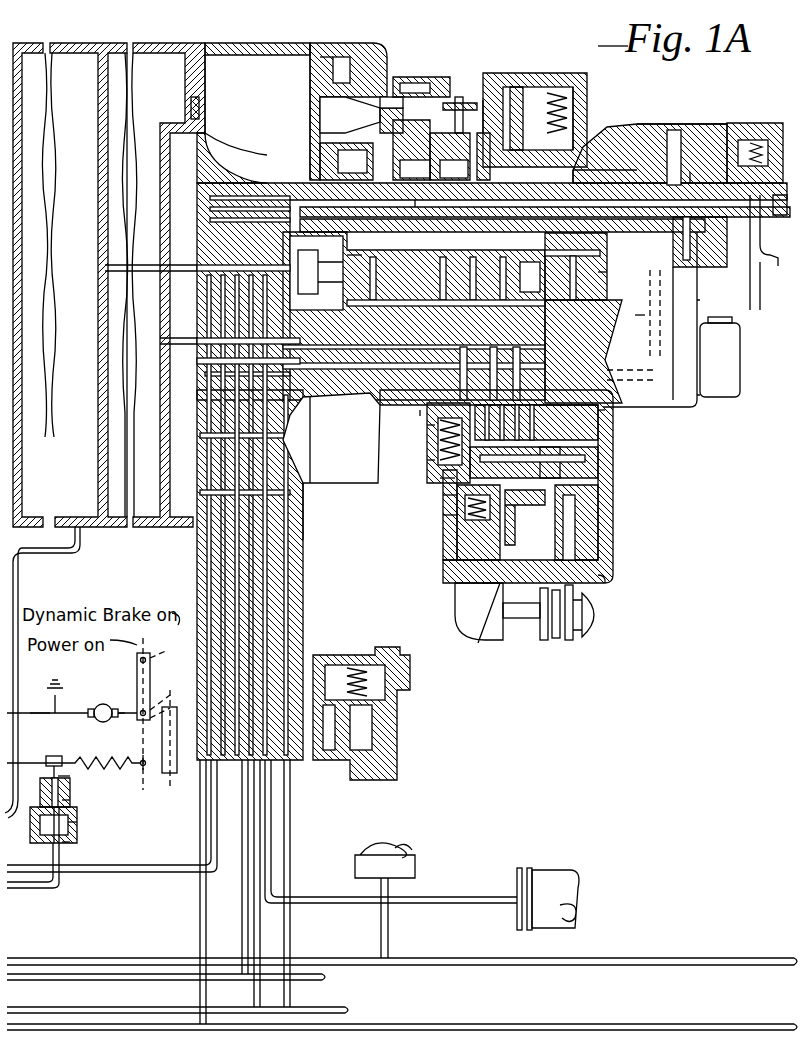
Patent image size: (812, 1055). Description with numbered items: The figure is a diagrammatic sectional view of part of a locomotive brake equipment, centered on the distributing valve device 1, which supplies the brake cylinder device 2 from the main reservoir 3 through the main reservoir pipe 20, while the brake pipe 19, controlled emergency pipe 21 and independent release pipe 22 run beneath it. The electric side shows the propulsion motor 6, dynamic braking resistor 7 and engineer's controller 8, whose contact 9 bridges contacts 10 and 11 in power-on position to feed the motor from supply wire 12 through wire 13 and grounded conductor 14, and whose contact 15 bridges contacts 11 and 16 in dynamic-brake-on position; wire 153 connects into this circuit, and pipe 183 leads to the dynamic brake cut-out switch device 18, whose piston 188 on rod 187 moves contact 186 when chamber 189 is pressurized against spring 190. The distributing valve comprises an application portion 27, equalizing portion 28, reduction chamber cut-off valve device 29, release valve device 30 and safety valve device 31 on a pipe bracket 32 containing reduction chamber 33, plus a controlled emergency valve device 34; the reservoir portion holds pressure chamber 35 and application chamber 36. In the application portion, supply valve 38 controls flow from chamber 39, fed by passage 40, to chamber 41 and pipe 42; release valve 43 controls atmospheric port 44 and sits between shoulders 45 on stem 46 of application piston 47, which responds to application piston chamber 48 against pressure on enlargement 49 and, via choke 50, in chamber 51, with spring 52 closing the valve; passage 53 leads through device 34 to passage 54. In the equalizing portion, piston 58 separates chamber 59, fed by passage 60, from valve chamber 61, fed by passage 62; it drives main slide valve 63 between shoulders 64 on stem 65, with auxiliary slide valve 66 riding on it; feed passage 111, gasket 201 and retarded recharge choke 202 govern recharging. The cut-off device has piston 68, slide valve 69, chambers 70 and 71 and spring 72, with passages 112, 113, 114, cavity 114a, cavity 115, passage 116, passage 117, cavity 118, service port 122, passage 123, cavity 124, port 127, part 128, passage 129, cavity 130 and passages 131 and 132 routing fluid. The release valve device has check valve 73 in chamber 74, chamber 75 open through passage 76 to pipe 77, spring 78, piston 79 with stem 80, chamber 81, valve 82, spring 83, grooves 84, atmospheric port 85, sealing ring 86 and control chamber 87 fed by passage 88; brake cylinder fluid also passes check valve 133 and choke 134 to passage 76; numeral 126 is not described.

The distributing valve device 1 is at (750, 382).
The brake cylinder device 2 is at (568, 870).
The main reservoir 3 is at (415, 860).
The propulsion motor 6 is at (115, 700).
The dynamic braking resistor 7 is at (90, 760).
The engineer's controller 8 is at (162, 637).
The contact 9 is at (169, 687).
The contact 10 is at (167, 652).
The contact 11 is at (170, 701).
The current supply wire 12 is at (137, 660).
The wire 13 is at (120, 718).
The grounded conductor 14 is at (68, 695).
The contact 15 is at (170, 765).
The contact 16 is at (141, 762).
The dynamic brake cut-out switch device 18 is at (88, 822).
The brake pipe 19 is at (390, 205).
The main reservoir pipe 20 is at (357, 960).
The controlled emergency pipe 21 is at (120, 1010).
The independent release pipe 22 is at (100, 975).
The application portion 27 is at (386, 48).
The equalizing portion 28 is at (772, 315).
The reduction chamber cut-off valve device 29 is at (625, 488).
The release valve device 30 is at (625, 528).
The safety valve device 31 is at (600, 615).
The pipe bracket 32 is at (312, 526).
The reduction chamber 33 is at (250, 58).
The controlled emergency valve device 34 is at (418, 676).
The pressure chamber 35 is at (75, 57).
The application chamber 36 is at (160, 57).
The fluid pressure supply valve 38 is at (548, 90).
The chamber 39 is at (520, 86).
The passage 40 is at (285, 540).
The chamber 41 is at (488, 98).
The passage and pipe 42 is at (463, 138).
The brake cylinder release valve 43 is at (432, 132).
The atmospheric port 44 is at (450, 157).
The operating shoulders 45 is at (411, 150).
The stem 46 is at (396, 108).
The application piston 47 is at (316, 44).
The application piston chamber 48 is at (296, 100).
The enlargement 49 is at (353, 86).
The choke 50 is at (346, 161).
The chamber 51 is at (347, 58).
The spring 52 is at (583, 112).
The passage 53 is at (263, 585).
The passage 54 is at (615, 343).
The equalizing piston 58 is at (633, 186).
The chamber 59 is at (650, 172).
The passage 60 is at (600, 180).
The valve chamber 61 is at (583, 170).
The passage 62 is at (183, 265).
The main slide valve 63 is at (598, 275).
The shoulders 64 is at (348, 275).
The stem 65 is at (362, 255).
The auxiliary slide valve 66 is at (508, 262).
The piston 68 is at (440, 478).
The slide valve 69 is at (595, 458).
The chamber 70 is at (600, 468).
The chamber 71 is at (428, 463).
The spring 72 is at (420, 447).
The check valve 73 is at (460, 555).
The chamber 74 is at (453, 517).
The chamber 75 is at (478, 643).
The passage 76 is at (200, 556).
The pipe 77 is at (178, 866).
The spring 78 is at (460, 535).
The piston 79 is at (612, 578).
The stem 80 is at (585, 552).
The chamber 81 is at (560, 520).
The valve 82 is at (510, 640).
The spring 83 is at (483, 583).
The grooves 84 is at (540, 640).
The atmospheric port 85 is at (548, 640).
The sealing ring 86 is at (565, 640).
The control chamber 87 is at (590, 540).
The passage 88 is at (300, 500).
The feed passage 111 is at (640, 318).
The passage 112 is at (430, 428).
The passage 113 is at (425, 413).
The passage 114 is at (455, 205).
The cavity 114a is at (450, 500).
The cavity 115 is at (600, 205).
The passage 116 is at (160, 342).
The passage 117 is at (197, 362).
The cavity 118 is at (415, 205).
The service port 122 is at (473, 262).
The passage 123 is at (605, 416).
The cavity 124 is at (443, 262).
The valve 126 is at (373, 262).
The port 127 is at (596, 300).
The part 128 is at (566, 262).
The passage 129 is at (605, 428).
The cavity 130 is at (490, 205).
The passage 131 is at (535, 262).
The passage 132 is at (612, 362).
The check valve 133 is at (745, 142).
The choke 134 is at (690, 172).
The wire 153 is at (35, 713).
The pipe 183 is at (55, 890).
The contact 186 is at (62, 758).
The rod 187 is at (70, 776).
The piston 188 is at (78, 822).
The chamber 189 is at (70, 842).
The spring 190 is at (70, 800).
The gasket 201 is at (622, 170).
The retarded recharge choke 202 is at (620, 325).